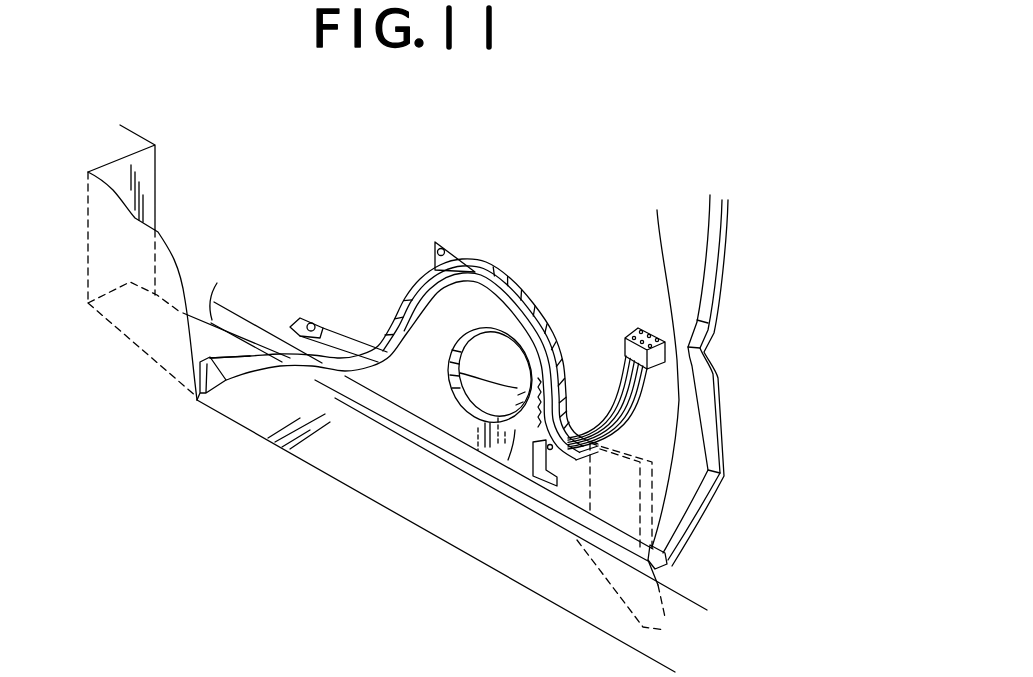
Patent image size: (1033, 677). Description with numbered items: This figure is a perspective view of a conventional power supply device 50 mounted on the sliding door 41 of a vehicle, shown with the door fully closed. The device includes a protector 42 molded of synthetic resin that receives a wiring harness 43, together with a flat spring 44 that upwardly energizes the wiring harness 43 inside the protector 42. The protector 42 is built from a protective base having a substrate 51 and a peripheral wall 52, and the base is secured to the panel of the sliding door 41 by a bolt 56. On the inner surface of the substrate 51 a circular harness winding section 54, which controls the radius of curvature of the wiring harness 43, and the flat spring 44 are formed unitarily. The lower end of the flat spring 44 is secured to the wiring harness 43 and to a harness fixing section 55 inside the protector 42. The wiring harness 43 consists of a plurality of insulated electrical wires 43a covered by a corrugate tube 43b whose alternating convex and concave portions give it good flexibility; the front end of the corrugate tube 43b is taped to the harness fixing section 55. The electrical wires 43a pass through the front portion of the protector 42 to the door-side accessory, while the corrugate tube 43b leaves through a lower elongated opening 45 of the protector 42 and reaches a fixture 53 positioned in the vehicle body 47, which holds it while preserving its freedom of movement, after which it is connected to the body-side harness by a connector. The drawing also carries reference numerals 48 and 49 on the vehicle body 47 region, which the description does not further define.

The sliding door 41 is at (726, 478).
The protector 42 is at (513, 282).
The wiring harness 43 is at (397, 330).
The insulated electrical wires 43a is at (628, 382).
The corrugate tube 43b is at (535, 317).
The flat spring 44 is at (487, 330).
The lower elongated opening 45 is at (462, 440).
The vehicle body 47 is at (157, 198).
The floor panel 48 is at (310, 443).
The fixing bracket 49 is at (437, 270).
The power supply device 50 is at (490, 242).
The substrate 51 is at (505, 458).
The peripheral wall 52 is at (473, 267).
The fixture 53 is at (200, 400).
The circular harness winding section 54 is at (460, 393).
The harness fixing section 55 is at (455, 372).
The bolt 56 is at (437, 267).